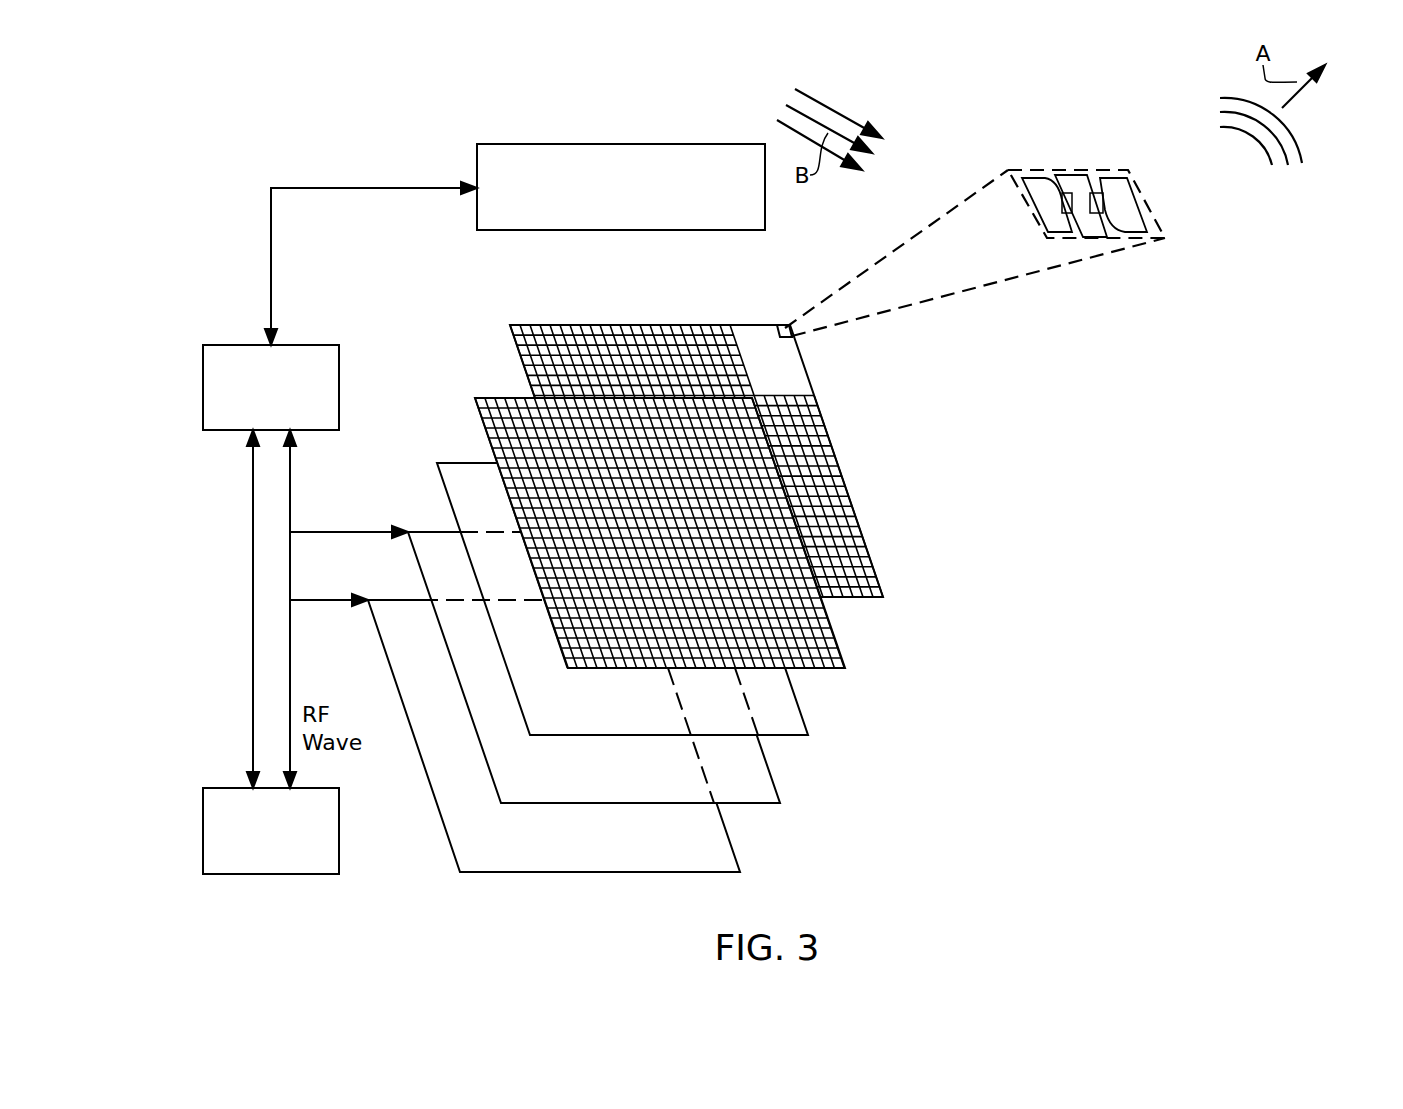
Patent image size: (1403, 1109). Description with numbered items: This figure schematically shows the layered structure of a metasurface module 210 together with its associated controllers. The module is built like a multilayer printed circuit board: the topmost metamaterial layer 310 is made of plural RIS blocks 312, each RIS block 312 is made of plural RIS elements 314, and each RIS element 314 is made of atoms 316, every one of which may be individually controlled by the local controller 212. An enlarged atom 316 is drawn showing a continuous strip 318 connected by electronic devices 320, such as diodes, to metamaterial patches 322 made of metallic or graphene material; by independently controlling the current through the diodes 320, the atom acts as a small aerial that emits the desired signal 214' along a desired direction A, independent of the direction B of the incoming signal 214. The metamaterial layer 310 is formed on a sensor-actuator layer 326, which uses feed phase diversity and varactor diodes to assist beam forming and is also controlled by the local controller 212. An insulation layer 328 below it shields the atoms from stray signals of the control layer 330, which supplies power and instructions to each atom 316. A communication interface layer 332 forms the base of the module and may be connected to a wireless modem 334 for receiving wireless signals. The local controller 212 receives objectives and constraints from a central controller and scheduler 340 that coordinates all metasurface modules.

The metasurface module 210 is at (671, 600).
The local controller 212 is at (203, 388).
The incoming signal 214 is at (836, 109).
The desired signal 214' is at (1307, 120).
The metamaterial layer 310 is at (742, 463).
The RIS block 312 is at (835, 440).
The RIS element 314 is at (802, 358).
The atom 316 is at (924, 206).
The continuous strip 318 is at (1065, 178).
The electronic devices 320 is at (1100, 176).
The metamaterial patches 322 is at (1128, 178).
The sensor-actuator layer 326 is at (843, 640).
The insulation layer 328 is at (802, 703).
The control layer 330 is at (770, 770).
The communication interface layer 332 is at (730, 838).
The wireless modem 334 is at (203, 832).
The central controller and scheduler 340 is at (620, 144).